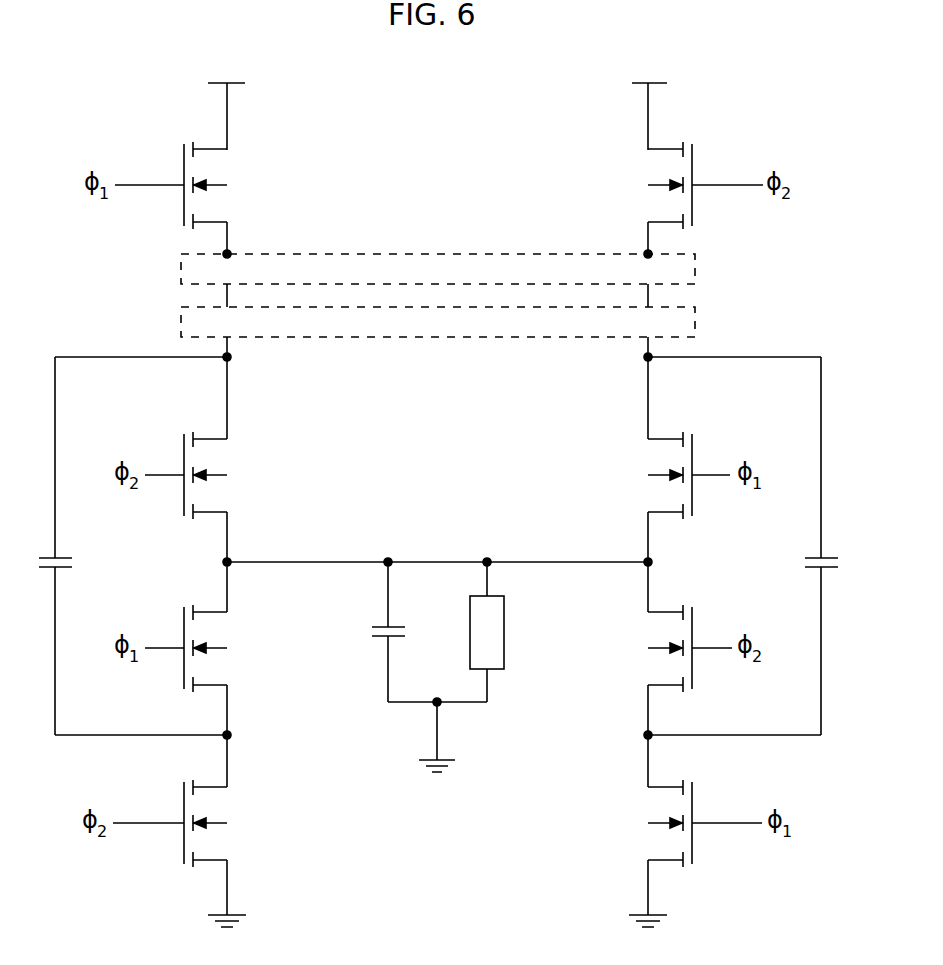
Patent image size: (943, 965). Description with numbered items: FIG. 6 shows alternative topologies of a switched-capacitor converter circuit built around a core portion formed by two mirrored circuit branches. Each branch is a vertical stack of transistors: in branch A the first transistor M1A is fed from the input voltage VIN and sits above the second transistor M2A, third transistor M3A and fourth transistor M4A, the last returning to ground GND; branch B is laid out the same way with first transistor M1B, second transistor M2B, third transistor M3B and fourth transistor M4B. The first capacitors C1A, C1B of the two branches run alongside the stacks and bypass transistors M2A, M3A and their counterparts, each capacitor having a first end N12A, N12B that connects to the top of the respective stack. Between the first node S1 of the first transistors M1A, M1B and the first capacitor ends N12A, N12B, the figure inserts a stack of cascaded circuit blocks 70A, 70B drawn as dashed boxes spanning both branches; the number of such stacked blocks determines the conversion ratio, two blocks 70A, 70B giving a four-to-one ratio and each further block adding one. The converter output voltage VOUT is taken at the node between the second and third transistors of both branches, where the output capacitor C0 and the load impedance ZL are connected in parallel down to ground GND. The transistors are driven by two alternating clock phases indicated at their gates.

The first transistor of branch A M1A is at (206, 166).
The first transistor of branch B M1B is at (672, 166).
The second transistor of branch A M2A is at (212, 455).
The second transistor of branch B M2B is at (668, 470).
The third transistor of branch A M3A is at (212, 632).
The third transistor of branch B M3B is at (660, 632).
The fourth transistor of branch A M4A is at (212, 807).
The fourth transistor of branch B M4B is at (660, 808).
The circuit block 70A is at (447, 263).
The circuit block 70B is at (451, 333).
The first node of the first transistors S1 is at (646, 253).
The first end of first capacitor C1A N12A is at (230, 359).
The first end of first capacitor C1B N12B is at (646, 359).
The first capacitor of branch A C1A is at (60, 556).
The first capacitor of branch B C1B is at (808, 568).
The output capacitor C0 is at (377, 634).
The load impedance ZL is at (497, 637).
The input voltage VIN is at (433, 97).
The output voltage VOUT is at (437, 544).
The ground GND is at (436, 830).